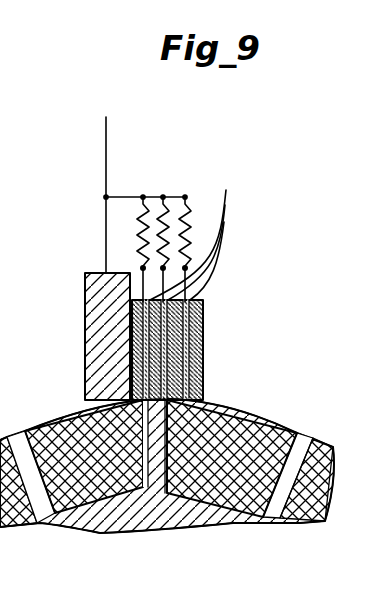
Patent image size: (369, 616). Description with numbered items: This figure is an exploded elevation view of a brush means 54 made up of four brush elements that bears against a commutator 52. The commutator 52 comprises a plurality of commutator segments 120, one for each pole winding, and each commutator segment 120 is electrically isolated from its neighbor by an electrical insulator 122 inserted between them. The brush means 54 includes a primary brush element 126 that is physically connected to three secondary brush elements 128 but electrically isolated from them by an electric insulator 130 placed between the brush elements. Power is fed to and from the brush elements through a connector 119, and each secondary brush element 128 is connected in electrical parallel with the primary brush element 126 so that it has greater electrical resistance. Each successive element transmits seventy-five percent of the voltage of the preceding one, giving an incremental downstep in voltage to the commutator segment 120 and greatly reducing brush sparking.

The commutator 52 is at (272, 406).
The brush 54 is at (66, 120).
The connector 119 is at (107, 138).
The commutator segment 120 is at (222, 401).
The electrical insulator 122 is at (43, 388).
The primary brush element 126 is at (85, 318).
The secondary brush element 128 is at (211, 237).
The electric insulator 130 is at (203, 318).